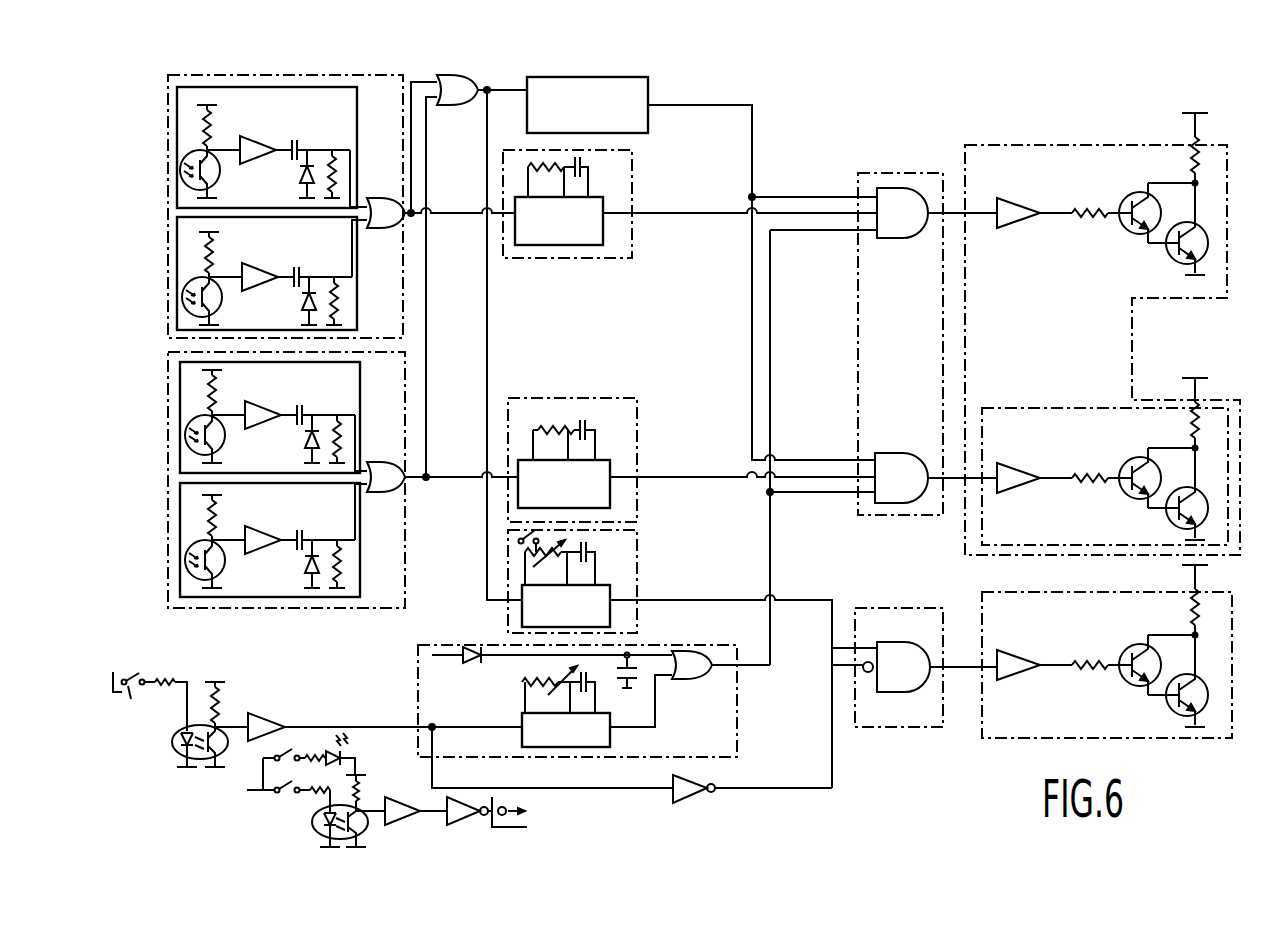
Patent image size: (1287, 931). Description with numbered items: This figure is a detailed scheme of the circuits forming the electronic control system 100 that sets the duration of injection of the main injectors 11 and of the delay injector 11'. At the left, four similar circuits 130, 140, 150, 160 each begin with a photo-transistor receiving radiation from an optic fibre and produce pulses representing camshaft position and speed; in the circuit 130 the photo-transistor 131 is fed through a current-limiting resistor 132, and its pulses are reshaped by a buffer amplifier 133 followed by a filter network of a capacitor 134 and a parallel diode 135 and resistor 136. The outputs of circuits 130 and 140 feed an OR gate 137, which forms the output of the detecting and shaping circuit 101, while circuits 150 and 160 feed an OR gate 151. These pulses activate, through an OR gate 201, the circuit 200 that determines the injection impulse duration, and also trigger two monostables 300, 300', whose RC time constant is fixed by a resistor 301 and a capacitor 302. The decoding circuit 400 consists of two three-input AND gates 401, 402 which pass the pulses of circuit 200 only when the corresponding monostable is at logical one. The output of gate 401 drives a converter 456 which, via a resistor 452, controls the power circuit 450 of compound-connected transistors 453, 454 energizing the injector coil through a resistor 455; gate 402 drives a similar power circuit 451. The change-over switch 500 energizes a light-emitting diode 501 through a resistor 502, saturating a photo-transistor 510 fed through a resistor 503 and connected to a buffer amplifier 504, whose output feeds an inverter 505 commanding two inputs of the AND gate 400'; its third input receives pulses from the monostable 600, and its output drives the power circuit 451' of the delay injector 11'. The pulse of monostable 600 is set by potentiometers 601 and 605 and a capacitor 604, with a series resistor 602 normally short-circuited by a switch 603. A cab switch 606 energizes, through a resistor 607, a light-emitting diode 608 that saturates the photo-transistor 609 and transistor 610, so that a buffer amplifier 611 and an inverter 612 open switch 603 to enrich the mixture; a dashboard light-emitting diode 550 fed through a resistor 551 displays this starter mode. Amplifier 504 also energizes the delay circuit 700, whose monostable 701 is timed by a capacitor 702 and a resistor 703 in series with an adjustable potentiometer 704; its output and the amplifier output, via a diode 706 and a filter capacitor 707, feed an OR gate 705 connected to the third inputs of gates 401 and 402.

The injector 11 is at (1221, 279).
The delay injector 11' is at (1222, 596).
The control system 100 is at (848, 120).
The detecting and shaping circuit 101 is at (172, 167).
The circuit 130 is at (260, 164).
The photo-transistor 131 is at (170, 196).
The current-limiting resistor 132 is at (168, 133).
The buffer amplifier 133 is at (254, 133).
The capacitor 134 is at (321, 131).
The diode 135 is at (282, 174).
The resistor 136 is at (362, 170).
The OR gate 137 is at (383, 235).
The circuit 140 is at (172, 268).
The circuit 150 is at (177, 405).
The OR gate 151 is at (382, 487).
The circuit 160 is at (177, 565).
The circuit determining the duration of the injection impulse 200 is at (587, 105).
The OR gate 201 is at (465, 103).
The monostable 300 is at (577, 203).
The monostable 300' is at (572, 452).
The resistor 301 is at (530, 176).
The capacitor 302 is at (598, 163).
The decoding circuit 400 is at (877, 338).
The AND gate 400' is at (899, 697).
The AND gate 401 is at (902, 213).
The AND gate 402 is at (901, 478).
The power circuit 450 is at (1068, 335).
The power circuit 451 is at (1062, 482).
The power circuit 451' is at (1133, 665).
The resistor 452 is at (1090, 213).
The transistor 453 is at (1137, 195).
The power transistor 454 is at (1175, 258).
The resistor 455 is at (1197, 168).
The converter 456 is at (1008, 212).
The change-over switch 500 is at (135, 707).
The light-emitting diode 501 is at (179, 768).
The current-limiting resistor 502 is at (166, 680).
The current-limiting resistor 503 is at (222, 692).
The buffer amplifier 504 is at (265, 722).
The inverter 505 is at (713, 788).
The photo-transistor 510 is at (225, 757).
The light-emitting diode 550 is at (350, 755).
The current-limiting resistor 551 is at (318, 742).
The monostable 600 is at (589, 654).
The potentiometer 601 is at (553, 548).
The resistor 602 is at (523, 552).
The switch 603 is at (520, 538).
The capacitor 604 is at (597, 549).
The potentiometer 605 is at (570, 547).
The switch 606 is at (280, 792).
The current-limiting resistor 607 is at (338, 803).
The light-emitting diode 608 is at (314, 832).
The photo-transistor 609 is at (370, 828).
The transistor 610 is at (354, 820).
The buffer amplifier 611 is at (433, 794).
The inverter 612 is at (475, 808).
The delay circuit 700 is at (612, 684).
The monostable 701 is at (566, 730).
The capacitor 702 is at (590, 683).
The resistor 703 is at (522, 688).
The adjustable potentiometer 704 is at (562, 673).
The OR gate 705 is at (708, 680).
The diode 706 is at (472, 640).
The filter capacitor 707 is at (640, 660).